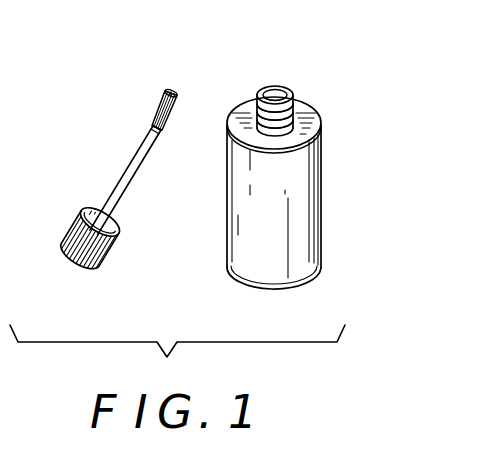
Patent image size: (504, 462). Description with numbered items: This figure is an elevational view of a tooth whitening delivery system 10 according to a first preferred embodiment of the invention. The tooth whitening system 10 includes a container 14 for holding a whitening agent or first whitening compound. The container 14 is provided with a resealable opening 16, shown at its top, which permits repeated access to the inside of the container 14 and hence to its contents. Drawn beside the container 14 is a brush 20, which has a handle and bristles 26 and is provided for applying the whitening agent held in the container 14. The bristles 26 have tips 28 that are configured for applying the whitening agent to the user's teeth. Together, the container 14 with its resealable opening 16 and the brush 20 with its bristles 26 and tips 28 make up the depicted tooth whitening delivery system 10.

The tooth whitening delivery system 10 is at (209, 88).
The container 14 is at (322, 157).
The resealable opening 16 is at (292, 97).
The brush 20 is at (118, 162).
The bristles 26 is at (148, 111).
The tips 28 is at (164, 94).